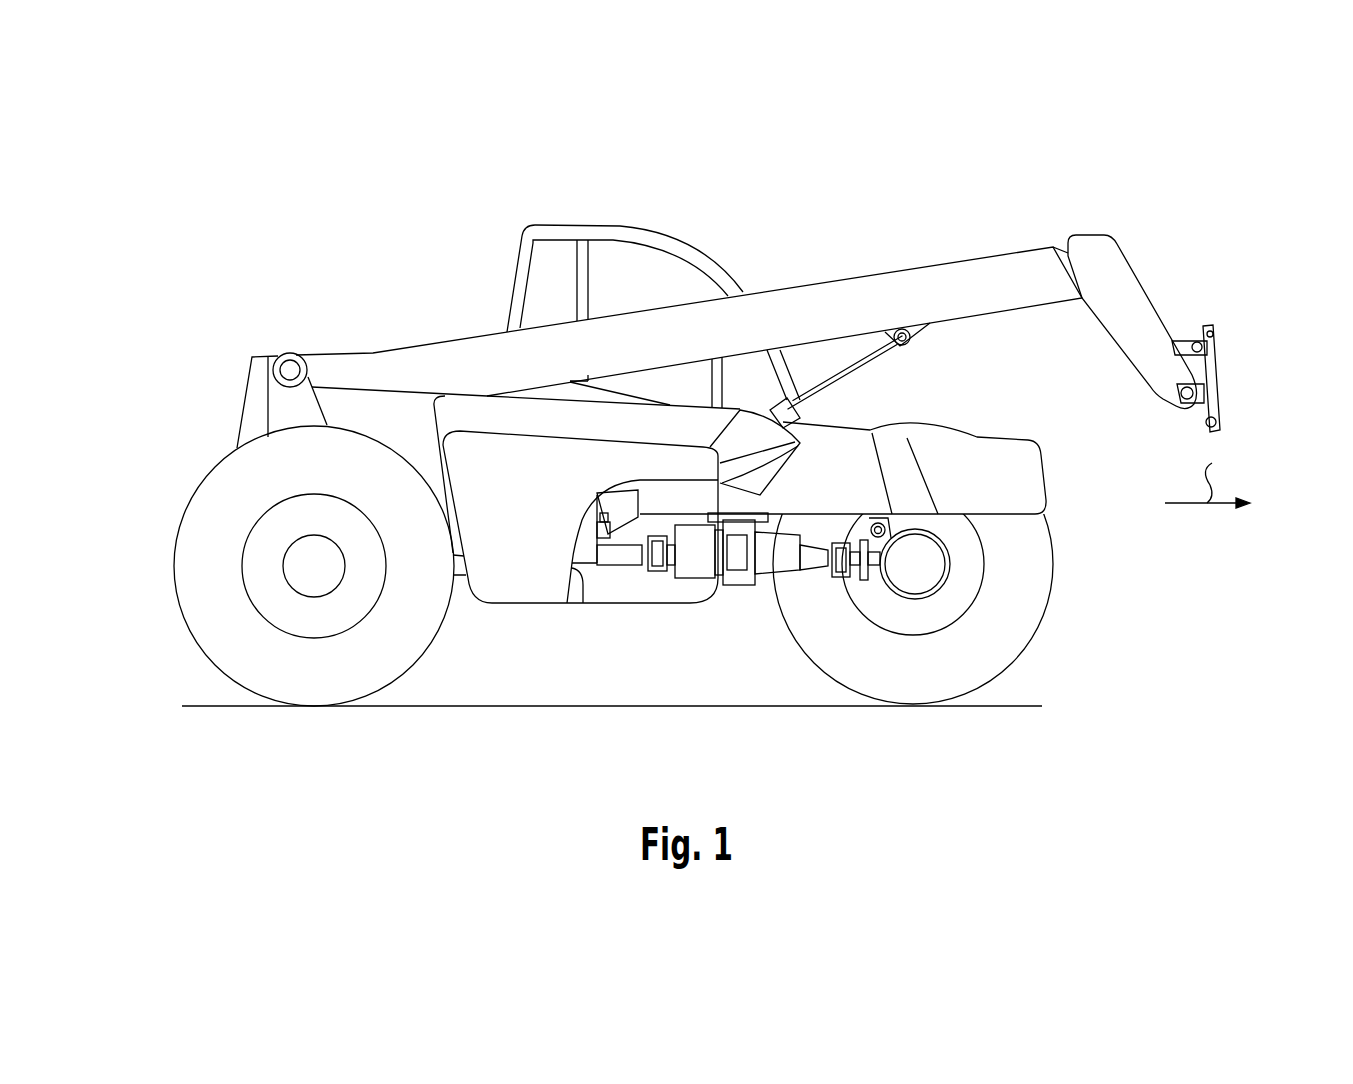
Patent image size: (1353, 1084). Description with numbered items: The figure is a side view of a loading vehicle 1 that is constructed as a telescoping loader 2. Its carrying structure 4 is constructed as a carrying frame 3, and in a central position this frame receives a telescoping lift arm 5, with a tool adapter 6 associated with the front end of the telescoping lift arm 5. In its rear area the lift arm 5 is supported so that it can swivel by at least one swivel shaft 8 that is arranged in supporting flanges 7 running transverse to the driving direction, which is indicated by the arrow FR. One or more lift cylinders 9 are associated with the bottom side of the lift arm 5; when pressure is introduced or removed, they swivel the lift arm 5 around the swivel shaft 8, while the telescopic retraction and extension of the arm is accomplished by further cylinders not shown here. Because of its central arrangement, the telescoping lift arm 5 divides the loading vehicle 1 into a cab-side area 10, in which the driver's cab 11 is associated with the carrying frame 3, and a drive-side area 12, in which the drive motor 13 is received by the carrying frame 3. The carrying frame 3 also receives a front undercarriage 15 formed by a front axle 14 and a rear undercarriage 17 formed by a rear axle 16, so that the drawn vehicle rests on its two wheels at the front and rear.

The loading vehicle 1 is at (700, 450).
The telescoping loader 2 is at (413, 216).
The carrying frame 3 is at (679, 575).
The carrying structure 4 is at (492, 571).
The telescoping lift arm 5 is at (957, 288).
The tool adapter 6 is at (1220, 362).
The supporting flanges 7 is at (285, 403).
The swivel shaft 8 is at (292, 368).
The lift cylinder 9 is at (853, 372).
The cab-side area 10 is at (650, 292).
The driver's cab 11 is at (605, 232).
The drive-side area 12 is at (523, 512).
The drive motor 13 is at (585, 555).
The front axle 14 is at (913, 564).
The front undercarriage 15 is at (1002, 615).
The rear axle 16 is at (313, 565).
The rear undercarriage 17 is at (315, 668).